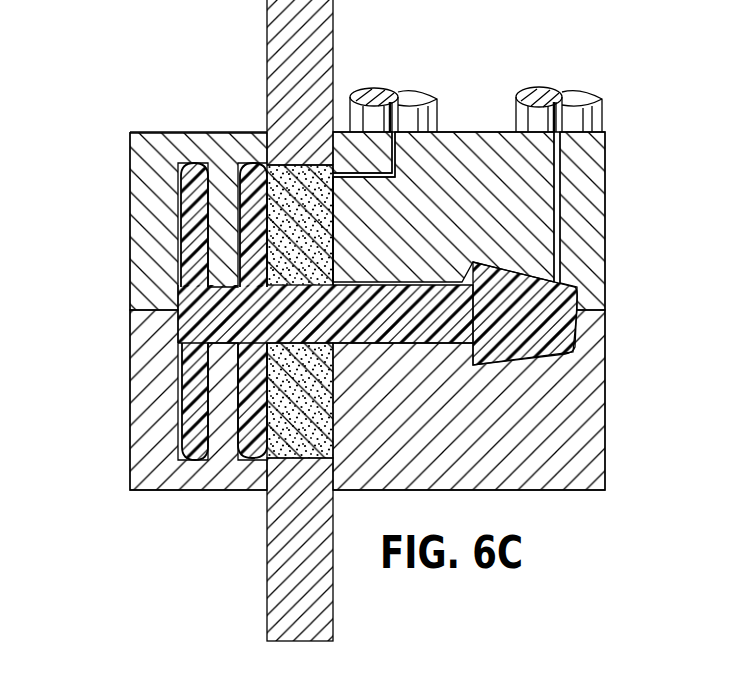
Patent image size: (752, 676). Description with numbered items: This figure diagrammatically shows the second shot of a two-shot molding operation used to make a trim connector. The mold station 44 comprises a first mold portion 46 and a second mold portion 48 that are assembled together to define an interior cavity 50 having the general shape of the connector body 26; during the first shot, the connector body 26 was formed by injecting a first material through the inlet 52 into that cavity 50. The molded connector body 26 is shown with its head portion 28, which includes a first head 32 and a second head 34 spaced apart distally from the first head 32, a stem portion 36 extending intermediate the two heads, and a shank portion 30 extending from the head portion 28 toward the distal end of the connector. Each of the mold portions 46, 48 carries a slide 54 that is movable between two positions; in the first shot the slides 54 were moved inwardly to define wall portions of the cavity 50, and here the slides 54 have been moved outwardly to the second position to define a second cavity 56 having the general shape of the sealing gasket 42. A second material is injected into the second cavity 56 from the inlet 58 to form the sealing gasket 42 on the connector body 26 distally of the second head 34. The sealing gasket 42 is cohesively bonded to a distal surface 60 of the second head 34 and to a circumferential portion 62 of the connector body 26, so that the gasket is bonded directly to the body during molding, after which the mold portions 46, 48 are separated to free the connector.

The connector body 26 is at (303, 320).
The head portion 28 is at (160, 264).
The shank portion 30 is at (413, 281).
The first head 32 is at (190, 162).
The second head 34 is at (255, 162).
The stem portion 36 is at (218, 345).
The sealing gasket 42 is at (320, 220).
The mold station 44 is at (632, 162).
The first mold portion 46 is at (598, 252).
The second mold portion 48 is at (603, 388).
The interior cavity 50 is at (398, 333).
The inlet 52 is at (578, 102).
The slide 54 is at (330, 50).
The second cavity 56 is at (322, 242).
The inlet 58 is at (430, 91).
The distal surface 60 is at (332, 190).
The circumferential portion 62 is at (332, 268).